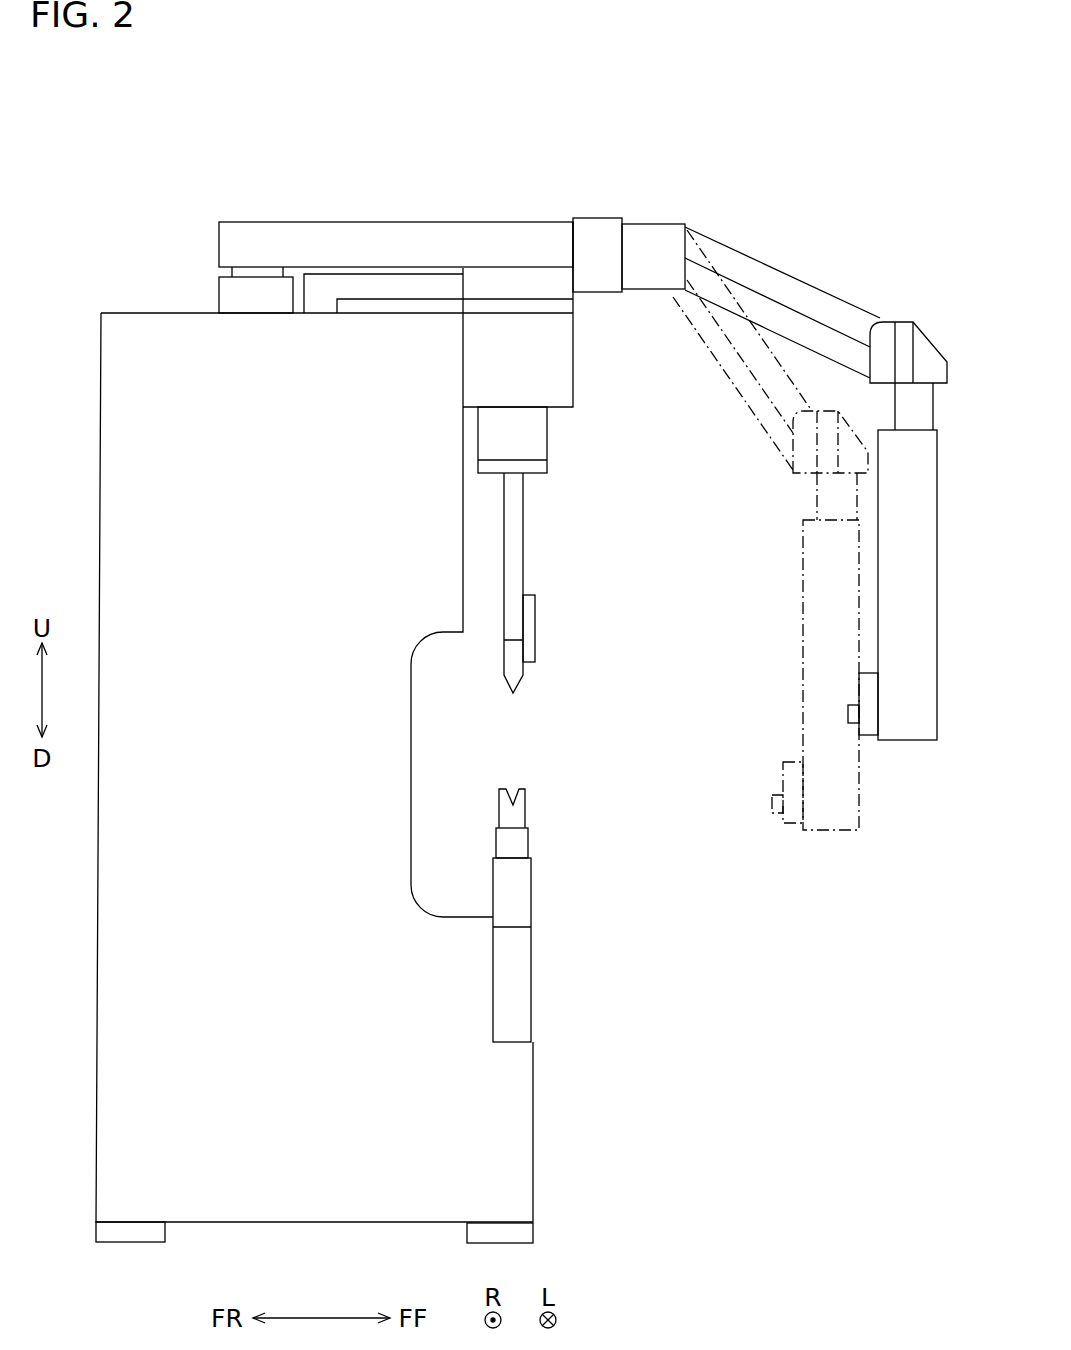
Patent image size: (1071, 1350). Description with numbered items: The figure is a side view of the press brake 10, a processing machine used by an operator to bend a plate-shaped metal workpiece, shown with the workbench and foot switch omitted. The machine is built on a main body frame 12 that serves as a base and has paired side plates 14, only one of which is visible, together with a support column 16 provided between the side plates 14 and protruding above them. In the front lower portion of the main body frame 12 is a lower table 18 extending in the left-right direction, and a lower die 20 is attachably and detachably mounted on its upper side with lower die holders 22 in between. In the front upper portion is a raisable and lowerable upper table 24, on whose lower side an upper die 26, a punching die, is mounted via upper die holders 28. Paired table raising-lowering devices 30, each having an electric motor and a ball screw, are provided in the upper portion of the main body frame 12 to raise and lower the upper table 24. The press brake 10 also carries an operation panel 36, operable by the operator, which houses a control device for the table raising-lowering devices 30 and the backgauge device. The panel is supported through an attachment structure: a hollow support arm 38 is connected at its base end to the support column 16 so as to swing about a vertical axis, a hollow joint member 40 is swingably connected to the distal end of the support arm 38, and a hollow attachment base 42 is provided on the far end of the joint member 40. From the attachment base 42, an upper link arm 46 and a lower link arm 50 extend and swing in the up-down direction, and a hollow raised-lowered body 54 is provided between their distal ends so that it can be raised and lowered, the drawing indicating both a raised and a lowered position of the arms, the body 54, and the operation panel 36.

The press brake 10 is at (373, 133).
The main body frame 12 is at (98, 362).
The side plates 14 is at (272, 808).
The support column 16 is at (228, 293).
The lower table 18 is at (533, 905).
The lower die 20 is at (523, 808).
The lower die holders 22 is at (523, 846).
The upper table 24 is at (525, 558).
The upper die 26 is at (520, 690).
The upper die holders 28 is at (535, 628).
The table raising-lowering devices 30 is at (577, 373).
The operation panel 36 is at (908, 725).
The support arm 38 is at (293, 238).
The joint member 40 is at (597, 238).
The attachment base 42 is at (665, 230).
The upper link arm 46 is at (760, 258).
The lower link arm 50 is at (783, 318).
The raised-lowered body 54 is at (930, 355).